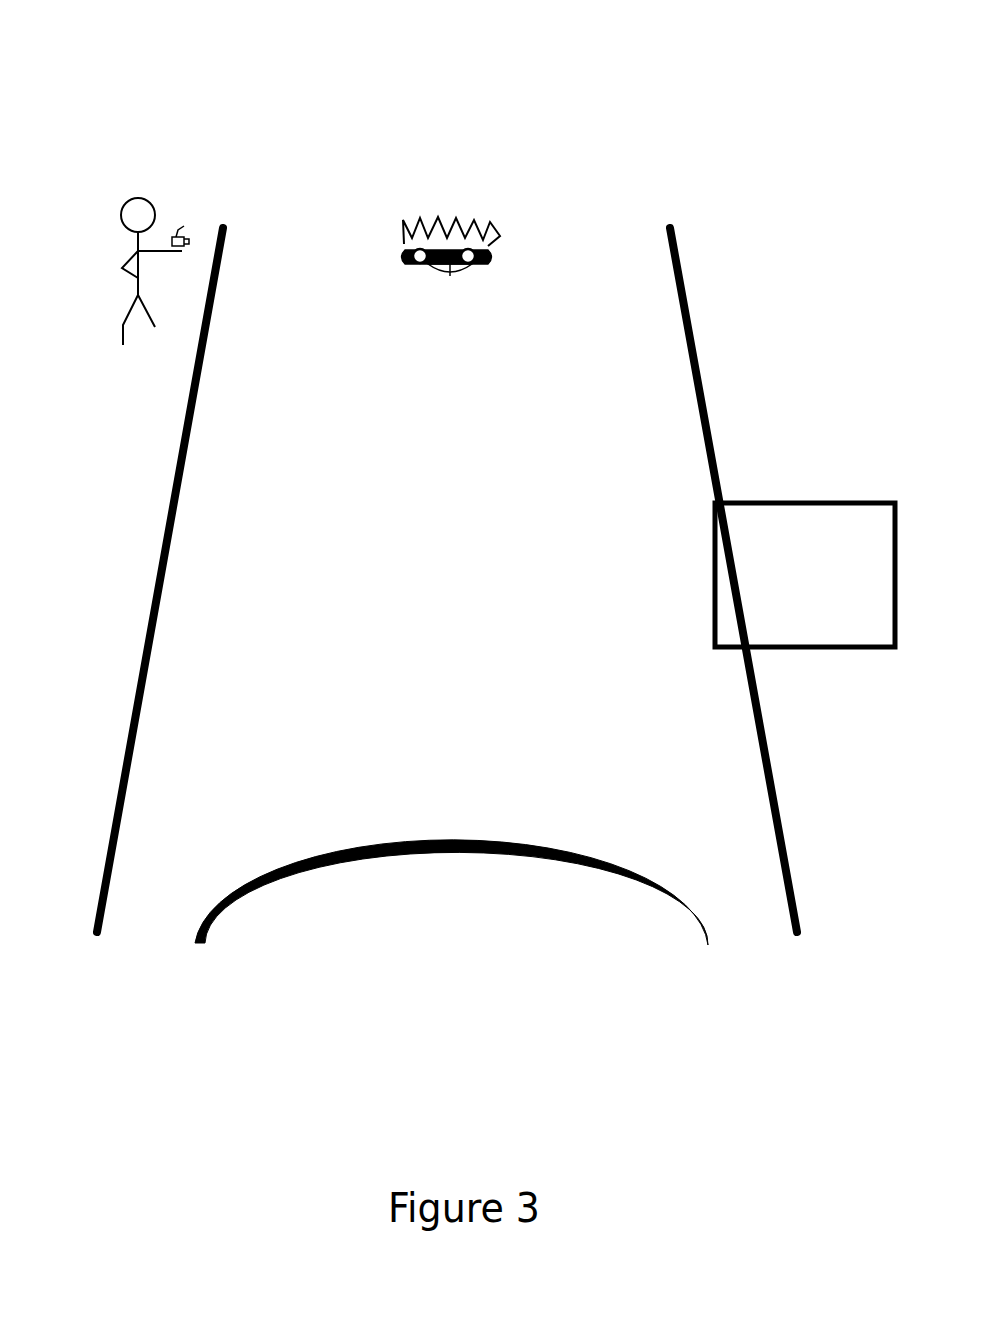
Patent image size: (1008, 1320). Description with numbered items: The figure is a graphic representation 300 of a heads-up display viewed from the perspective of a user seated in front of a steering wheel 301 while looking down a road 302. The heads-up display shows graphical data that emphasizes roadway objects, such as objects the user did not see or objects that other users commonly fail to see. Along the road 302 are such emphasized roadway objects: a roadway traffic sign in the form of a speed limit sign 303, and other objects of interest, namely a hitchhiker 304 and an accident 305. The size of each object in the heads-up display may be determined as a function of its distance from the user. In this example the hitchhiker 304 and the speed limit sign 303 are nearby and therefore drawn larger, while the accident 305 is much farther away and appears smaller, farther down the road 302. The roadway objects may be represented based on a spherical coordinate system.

The graphic representation 300 is at (104, 69).
The steering wheel 301 is at (197, 943).
The road 302 is at (97, 932).
The speed limit sign 303 is at (814, 503).
The hitchhiker 304 is at (123, 345).
The accident 305 is at (422, 277).